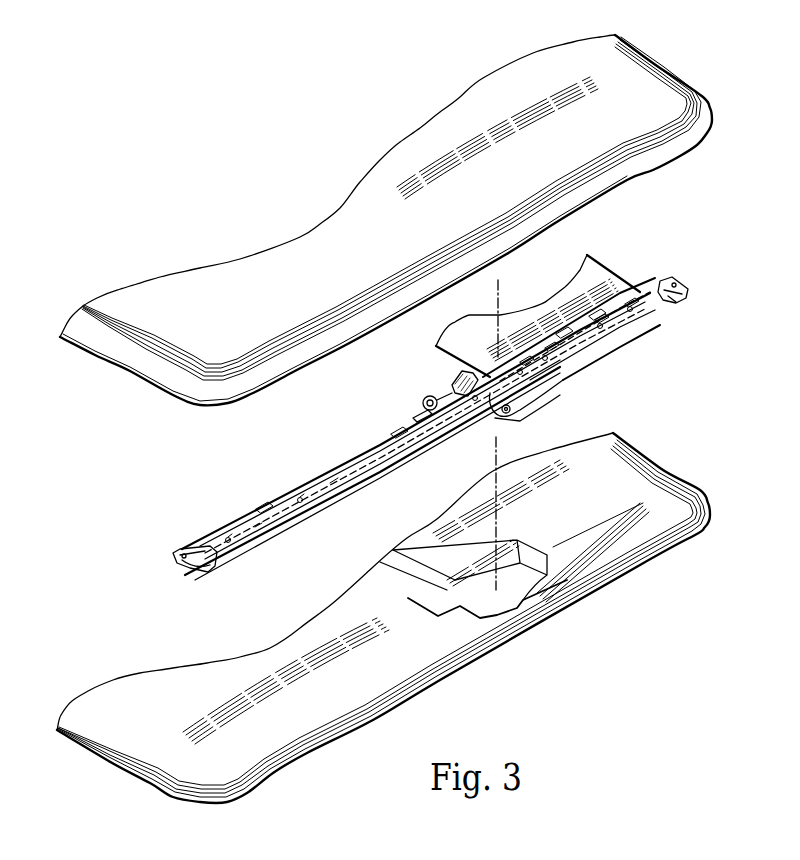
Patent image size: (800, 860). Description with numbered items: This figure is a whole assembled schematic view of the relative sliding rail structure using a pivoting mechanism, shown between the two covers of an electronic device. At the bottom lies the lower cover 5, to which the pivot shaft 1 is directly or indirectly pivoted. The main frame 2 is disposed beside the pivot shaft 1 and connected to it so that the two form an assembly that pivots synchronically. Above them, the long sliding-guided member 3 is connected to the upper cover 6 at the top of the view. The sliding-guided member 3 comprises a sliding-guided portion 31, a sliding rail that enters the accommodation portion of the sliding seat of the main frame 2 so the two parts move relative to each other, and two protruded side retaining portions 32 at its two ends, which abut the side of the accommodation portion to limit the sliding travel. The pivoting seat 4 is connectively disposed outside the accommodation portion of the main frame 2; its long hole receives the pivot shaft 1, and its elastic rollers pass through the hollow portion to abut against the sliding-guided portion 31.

The pivot shaft 1 is at (437, 380).
The main frame 2 is at (598, 292).
The sliding-guided member 3 is at (345, 462).
The sliding-guided portion 31 is at (265, 540).
The side retaining portion 32 is at (212, 568).
The pivoting seat 4 is at (620, 350).
The lower cover 5 is at (420, 655).
The upper cover 6 is at (612, 121).